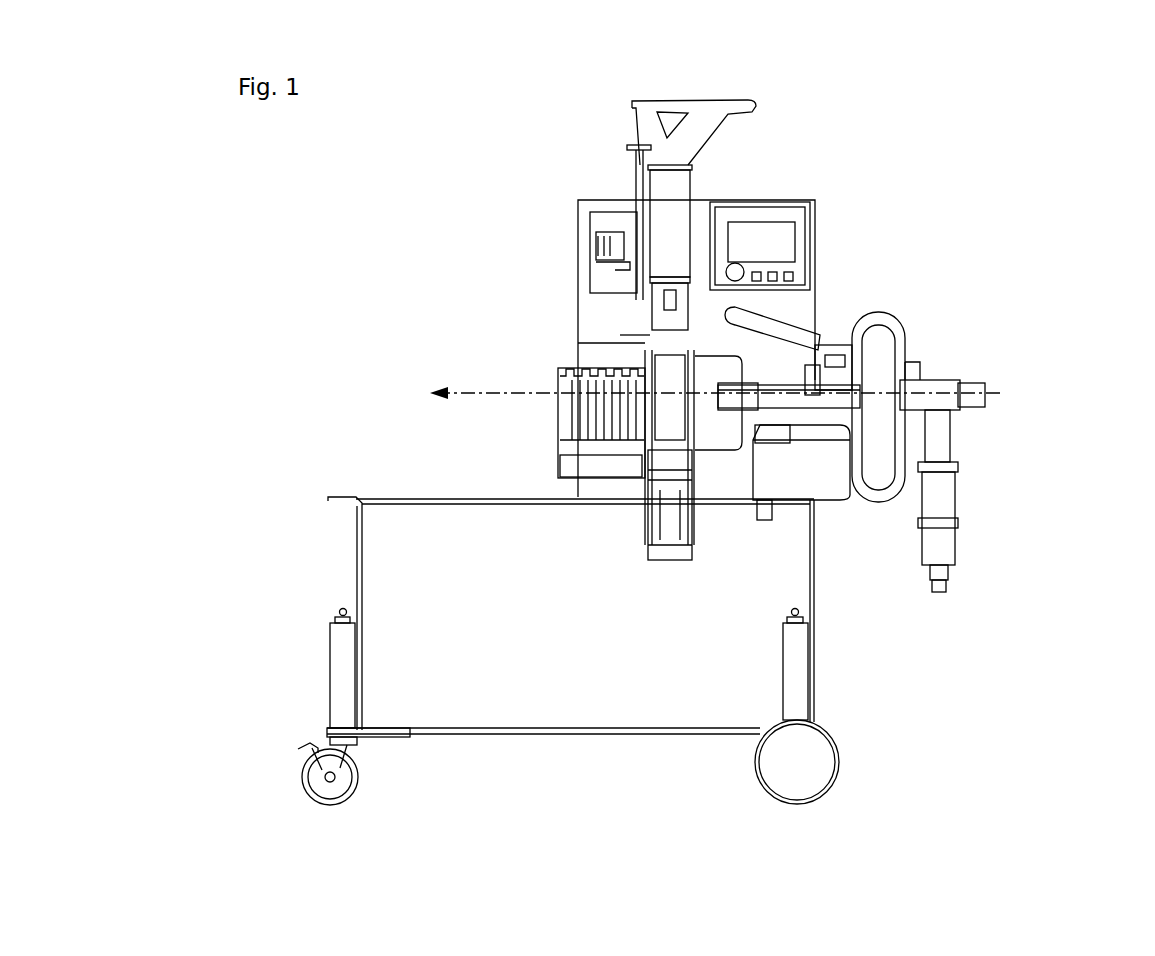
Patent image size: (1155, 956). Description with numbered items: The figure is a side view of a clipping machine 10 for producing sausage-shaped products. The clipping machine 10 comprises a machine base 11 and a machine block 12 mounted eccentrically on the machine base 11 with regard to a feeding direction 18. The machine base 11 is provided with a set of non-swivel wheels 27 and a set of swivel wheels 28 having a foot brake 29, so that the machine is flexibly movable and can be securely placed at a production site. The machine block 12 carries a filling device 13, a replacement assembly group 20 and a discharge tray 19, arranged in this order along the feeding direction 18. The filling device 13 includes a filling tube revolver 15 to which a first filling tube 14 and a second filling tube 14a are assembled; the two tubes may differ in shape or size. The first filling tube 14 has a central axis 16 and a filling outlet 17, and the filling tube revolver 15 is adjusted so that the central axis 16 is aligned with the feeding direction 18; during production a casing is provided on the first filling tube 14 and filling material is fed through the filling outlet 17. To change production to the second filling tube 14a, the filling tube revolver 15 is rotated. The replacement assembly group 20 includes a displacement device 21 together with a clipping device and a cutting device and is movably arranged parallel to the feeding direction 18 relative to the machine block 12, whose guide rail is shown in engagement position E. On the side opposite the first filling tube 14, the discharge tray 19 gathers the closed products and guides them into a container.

The clipping machine 10 is at (330, 253).
The machine base 11 is at (500, 558).
The machine block 12 is at (713, 300).
The filling device 13 is at (948, 300).
The first filling tube 14 is at (762, 400).
The second filling tube 14a is at (760, 393).
The filling tube revolver 15 is at (885, 363).
The central axis 16 is at (987, 393).
The filling outlet 17 is at (715, 390).
The feeding direction 18 is at (488, 392).
The discharge tray 19 is at (583, 412).
The replacement assembly group 20 is at (597, 190).
The displacement device 21 is at (722, 449).
The non-swivel wheels 27 is at (800, 763).
The swivel wheels 28 is at (300, 770).
The caster brake 29 is at (297, 747).
The engagement position E is at (536, 275).